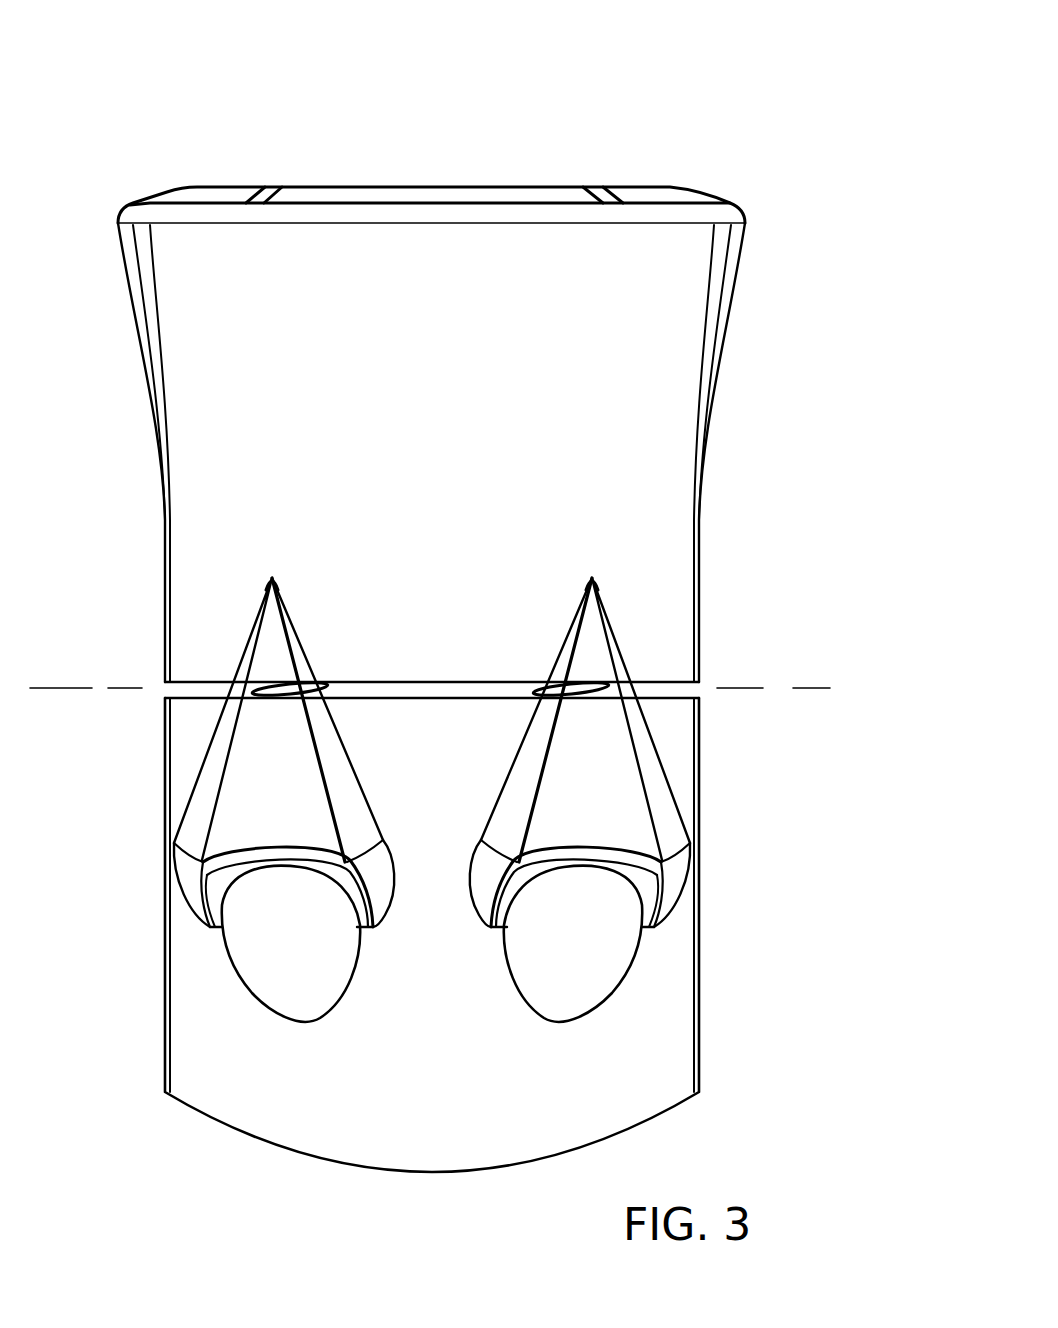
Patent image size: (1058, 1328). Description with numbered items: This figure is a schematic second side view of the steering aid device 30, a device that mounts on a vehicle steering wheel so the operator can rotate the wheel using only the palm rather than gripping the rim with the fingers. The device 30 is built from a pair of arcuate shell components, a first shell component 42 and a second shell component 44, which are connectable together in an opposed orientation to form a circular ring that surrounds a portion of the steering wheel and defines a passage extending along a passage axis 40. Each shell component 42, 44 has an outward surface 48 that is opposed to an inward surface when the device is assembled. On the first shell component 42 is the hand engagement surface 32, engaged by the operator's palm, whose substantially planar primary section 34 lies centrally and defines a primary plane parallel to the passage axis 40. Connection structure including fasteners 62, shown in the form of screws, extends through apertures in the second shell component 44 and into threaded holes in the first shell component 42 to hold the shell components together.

The steering aid device 30 is at (707, 88).
The hand engagement surface 32 is at (485, 186).
The primary section 34 is at (568, 186).
The outward surface 48 is at (662, 497).
The first shell component 42 is at (700, 559).
The passage axis 40 is at (810, 690).
The slot 62 is at (280, 700).
The second shell component 44 is at (698, 915).